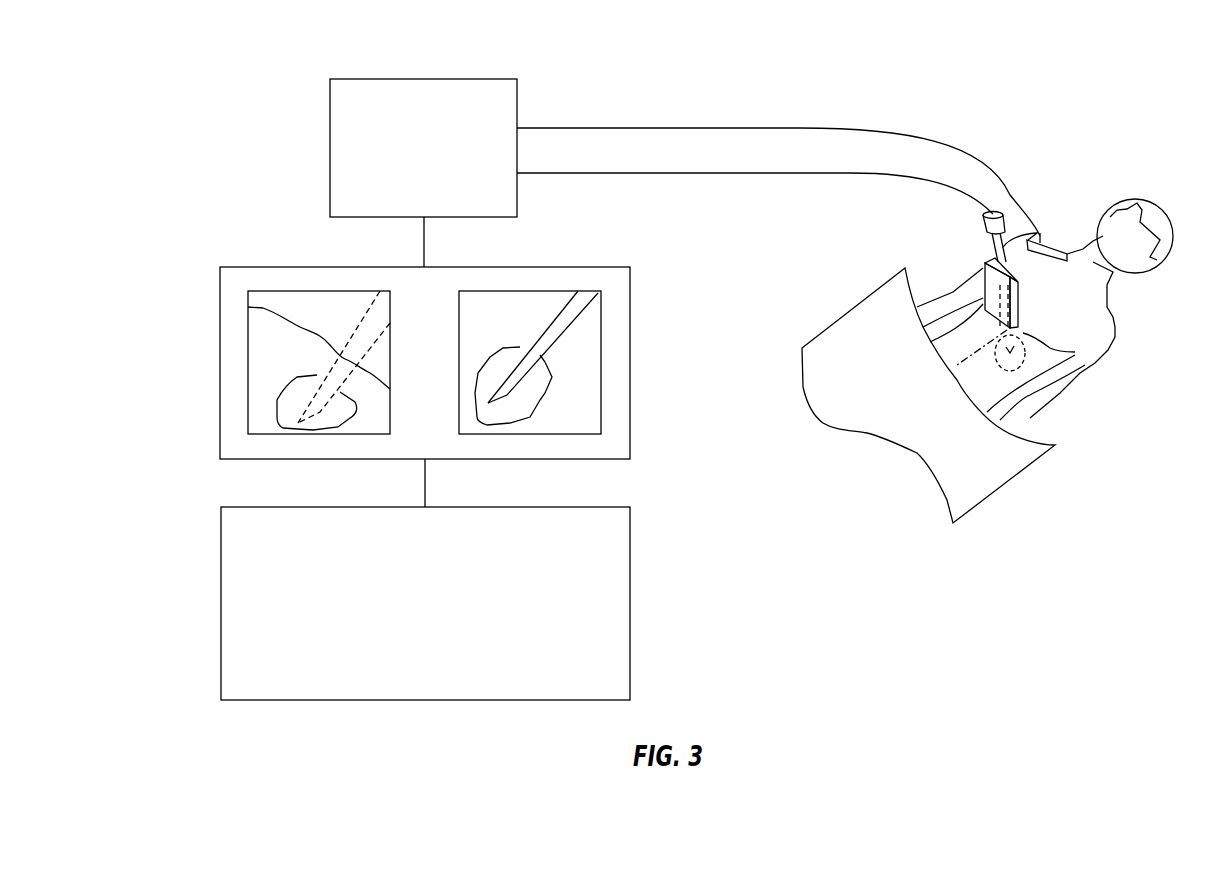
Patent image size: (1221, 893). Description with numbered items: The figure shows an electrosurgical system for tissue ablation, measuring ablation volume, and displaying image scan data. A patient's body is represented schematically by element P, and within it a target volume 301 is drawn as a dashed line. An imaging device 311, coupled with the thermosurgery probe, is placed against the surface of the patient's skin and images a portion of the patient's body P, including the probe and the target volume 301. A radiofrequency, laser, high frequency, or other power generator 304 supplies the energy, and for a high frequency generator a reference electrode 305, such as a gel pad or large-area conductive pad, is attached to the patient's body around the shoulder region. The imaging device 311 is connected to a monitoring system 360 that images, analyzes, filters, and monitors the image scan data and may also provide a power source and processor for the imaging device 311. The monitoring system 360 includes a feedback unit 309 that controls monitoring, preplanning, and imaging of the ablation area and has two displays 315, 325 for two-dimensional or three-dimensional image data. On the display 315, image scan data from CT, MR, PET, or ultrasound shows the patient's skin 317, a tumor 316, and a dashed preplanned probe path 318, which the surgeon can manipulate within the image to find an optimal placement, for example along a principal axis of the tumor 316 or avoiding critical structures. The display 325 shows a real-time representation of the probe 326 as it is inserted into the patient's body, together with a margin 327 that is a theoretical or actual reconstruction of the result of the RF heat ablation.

The target volume 301 is at (1025, 355).
The power generator 304 is at (403, 79).
The reference electrode 305 is at (1050, 233).
The feedback unit 309 is at (258, 262).
The imaging device 311 is at (983, 278).
The display 315 is at (248, 353).
The tumor 316 is at (277, 405).
The patient's skin 317 is at (263, 309).
The preplanned probe path 318 is at (367, 307).
The display 325 is at (602, 337).
The probe 326 is at (553, 330).
The margin 327 is at (560, 393).
The monitoring system 360 is at (633, 598).
The patient's body P is at (1100, 318).